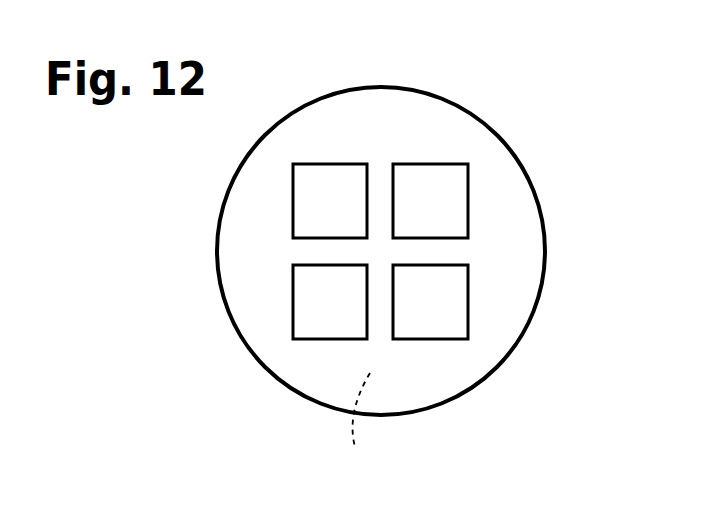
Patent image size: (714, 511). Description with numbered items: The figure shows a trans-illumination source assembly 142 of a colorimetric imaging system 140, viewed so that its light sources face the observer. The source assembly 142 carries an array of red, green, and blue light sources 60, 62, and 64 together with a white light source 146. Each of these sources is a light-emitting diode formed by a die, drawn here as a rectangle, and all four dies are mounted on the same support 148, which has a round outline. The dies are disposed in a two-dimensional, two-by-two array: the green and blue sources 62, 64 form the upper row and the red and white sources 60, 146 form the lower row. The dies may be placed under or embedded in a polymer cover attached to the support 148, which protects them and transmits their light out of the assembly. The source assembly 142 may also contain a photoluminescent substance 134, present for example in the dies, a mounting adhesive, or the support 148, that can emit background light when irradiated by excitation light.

The colorimetric imaging system 140 is at (332, 48).
The trans-illumination source assembly 142 is at (332, 82).
The support 148 is at (475, 114).
The green light source 62 is at (293, 178).
The blue light source 64 is at (468, 178).
The red light source 60 is at (293, 279).
The white light source 146 is at (468, 279).
The photoluminescent substance 134 is at (354, 423).